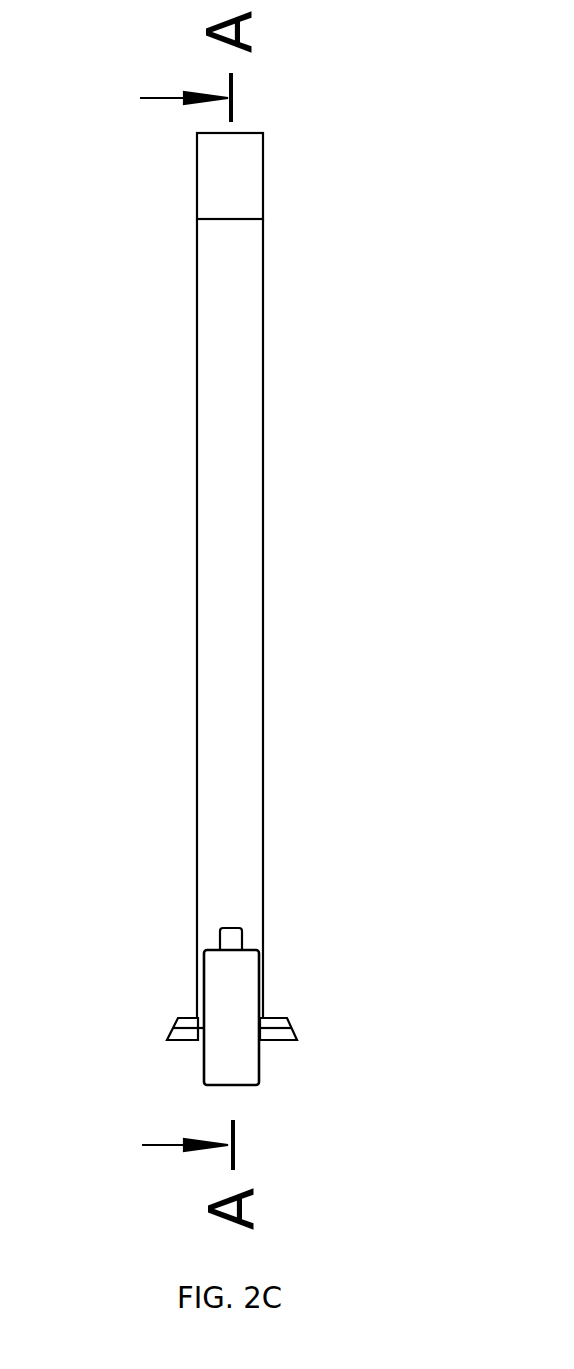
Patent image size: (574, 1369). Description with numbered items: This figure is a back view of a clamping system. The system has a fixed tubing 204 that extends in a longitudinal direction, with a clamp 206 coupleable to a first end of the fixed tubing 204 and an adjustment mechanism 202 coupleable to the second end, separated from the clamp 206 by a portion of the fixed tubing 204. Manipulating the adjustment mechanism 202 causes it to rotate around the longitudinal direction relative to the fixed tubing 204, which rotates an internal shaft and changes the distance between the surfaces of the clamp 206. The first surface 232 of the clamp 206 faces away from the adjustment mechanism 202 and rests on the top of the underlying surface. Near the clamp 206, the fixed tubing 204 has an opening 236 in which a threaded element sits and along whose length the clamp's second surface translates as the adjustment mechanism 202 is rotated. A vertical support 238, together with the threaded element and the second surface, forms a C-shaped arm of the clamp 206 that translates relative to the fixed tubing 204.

The adjustment mechanism 202 is at (260, 163).
The fixed tubing 204 is at (258, 427).
The clamp 206 is at (312, 888).
The first surface 232 is at (170, 1036).
The opening 236 is at (220, 938).
The vertical support 238 is at (260, 998).